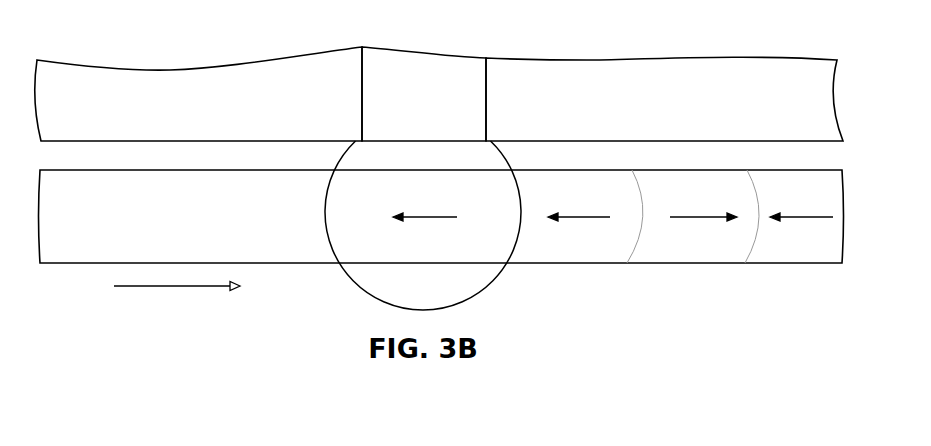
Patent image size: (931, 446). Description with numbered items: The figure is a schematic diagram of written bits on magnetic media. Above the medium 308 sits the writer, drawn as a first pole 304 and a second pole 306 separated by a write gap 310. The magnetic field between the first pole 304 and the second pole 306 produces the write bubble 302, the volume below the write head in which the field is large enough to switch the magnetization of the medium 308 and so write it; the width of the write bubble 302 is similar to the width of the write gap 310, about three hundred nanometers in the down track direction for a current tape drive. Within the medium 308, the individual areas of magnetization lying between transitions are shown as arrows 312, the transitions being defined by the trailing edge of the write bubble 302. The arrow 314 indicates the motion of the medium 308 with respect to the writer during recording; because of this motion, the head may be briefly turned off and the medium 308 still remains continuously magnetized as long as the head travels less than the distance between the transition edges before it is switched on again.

The write bubble 302 is at (505, 273).
The first pole 304 is at (206, 105).
The second pole 306 is at (590, 105).
The medium 308 is at (68, 218).
The write gap 310 is at (407, 105).
The arrows 312 is at (700, 218).
The arrow 314 is at (165, 287).